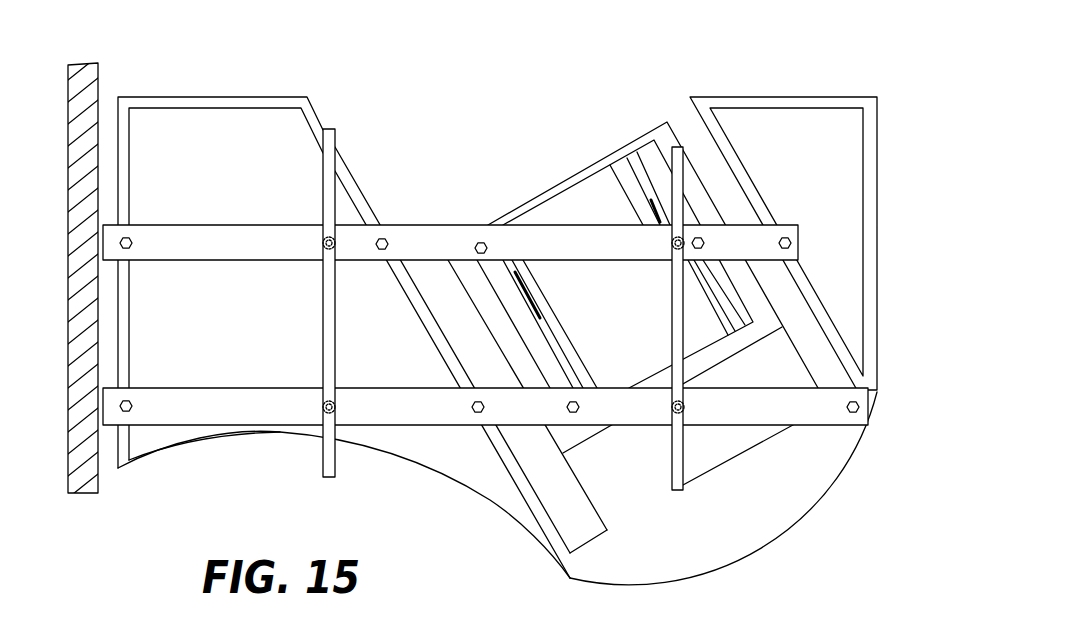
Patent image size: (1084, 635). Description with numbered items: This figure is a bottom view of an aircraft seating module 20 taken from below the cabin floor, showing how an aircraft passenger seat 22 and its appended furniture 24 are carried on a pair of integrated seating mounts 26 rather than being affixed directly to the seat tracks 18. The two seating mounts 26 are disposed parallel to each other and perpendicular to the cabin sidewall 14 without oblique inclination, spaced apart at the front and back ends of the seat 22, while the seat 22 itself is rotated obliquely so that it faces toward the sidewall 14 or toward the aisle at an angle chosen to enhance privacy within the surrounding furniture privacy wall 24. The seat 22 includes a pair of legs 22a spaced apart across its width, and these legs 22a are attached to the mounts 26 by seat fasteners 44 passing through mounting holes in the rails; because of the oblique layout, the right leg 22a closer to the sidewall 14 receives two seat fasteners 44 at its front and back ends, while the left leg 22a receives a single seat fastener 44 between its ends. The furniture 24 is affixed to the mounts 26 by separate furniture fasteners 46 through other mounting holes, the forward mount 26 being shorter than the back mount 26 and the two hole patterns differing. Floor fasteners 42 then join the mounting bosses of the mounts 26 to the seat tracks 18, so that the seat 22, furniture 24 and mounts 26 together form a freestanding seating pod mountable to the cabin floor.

The sidewall 14 is at (67, 88).
The seat track 18 is at (336, 135).
The seating module 20 is at (890, 266).
The aircraft passenger seat 22 is at (632, 142).
The seat leg 22a is at (500, 302).
The furniture 24 is at (183, 97).
The seating mount 26 is at (205, 226).
The floor fastener 42 is at (670, 244).
The seat fastener 44 is at (481, 243).
The furniture fastener 46 is at (785, 238).